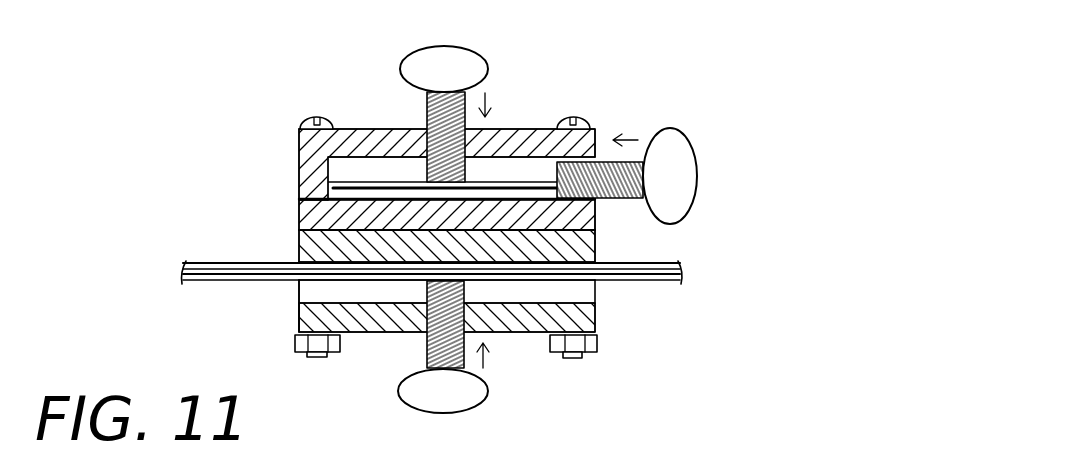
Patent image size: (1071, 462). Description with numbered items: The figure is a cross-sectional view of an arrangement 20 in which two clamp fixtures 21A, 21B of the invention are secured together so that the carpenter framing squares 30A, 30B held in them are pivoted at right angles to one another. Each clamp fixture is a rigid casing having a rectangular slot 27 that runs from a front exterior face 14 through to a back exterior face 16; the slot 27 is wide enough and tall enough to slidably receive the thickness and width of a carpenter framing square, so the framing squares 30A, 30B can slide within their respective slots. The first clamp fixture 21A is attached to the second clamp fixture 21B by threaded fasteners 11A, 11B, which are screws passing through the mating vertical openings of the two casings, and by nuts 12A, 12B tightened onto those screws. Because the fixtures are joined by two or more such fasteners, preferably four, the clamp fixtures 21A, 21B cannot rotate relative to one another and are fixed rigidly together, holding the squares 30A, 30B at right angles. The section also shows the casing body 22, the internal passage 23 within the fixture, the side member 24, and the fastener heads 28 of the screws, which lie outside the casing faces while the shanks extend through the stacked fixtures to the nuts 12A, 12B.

The clamp assembly 20 is at (149, 78).
The threaded fastener 11A is at (303, 116).
The threaded fastener 11B is at (581, 117).
The nut 12A is at (341, 343).
The nut 12B is at (598, 343).
The front exterior face 14 is at (298, 315).
The back exterior face 16 is at (596, 320).
The clamp fixture 21A is at (296, 131).
The second clamp fixture 21B is at (519, 335).
The upper plate 22 is at (299, 165).
The channel 23 is at (377, 129).
The side bolt 24 is at (600, 137).
The rectangular slot 27 is at (485, 170).
The bolt 28 is at (399, 81).
The carpenter framing square 30A is at (244, 283).
The carpenter framing square 30B is at (320, 206).